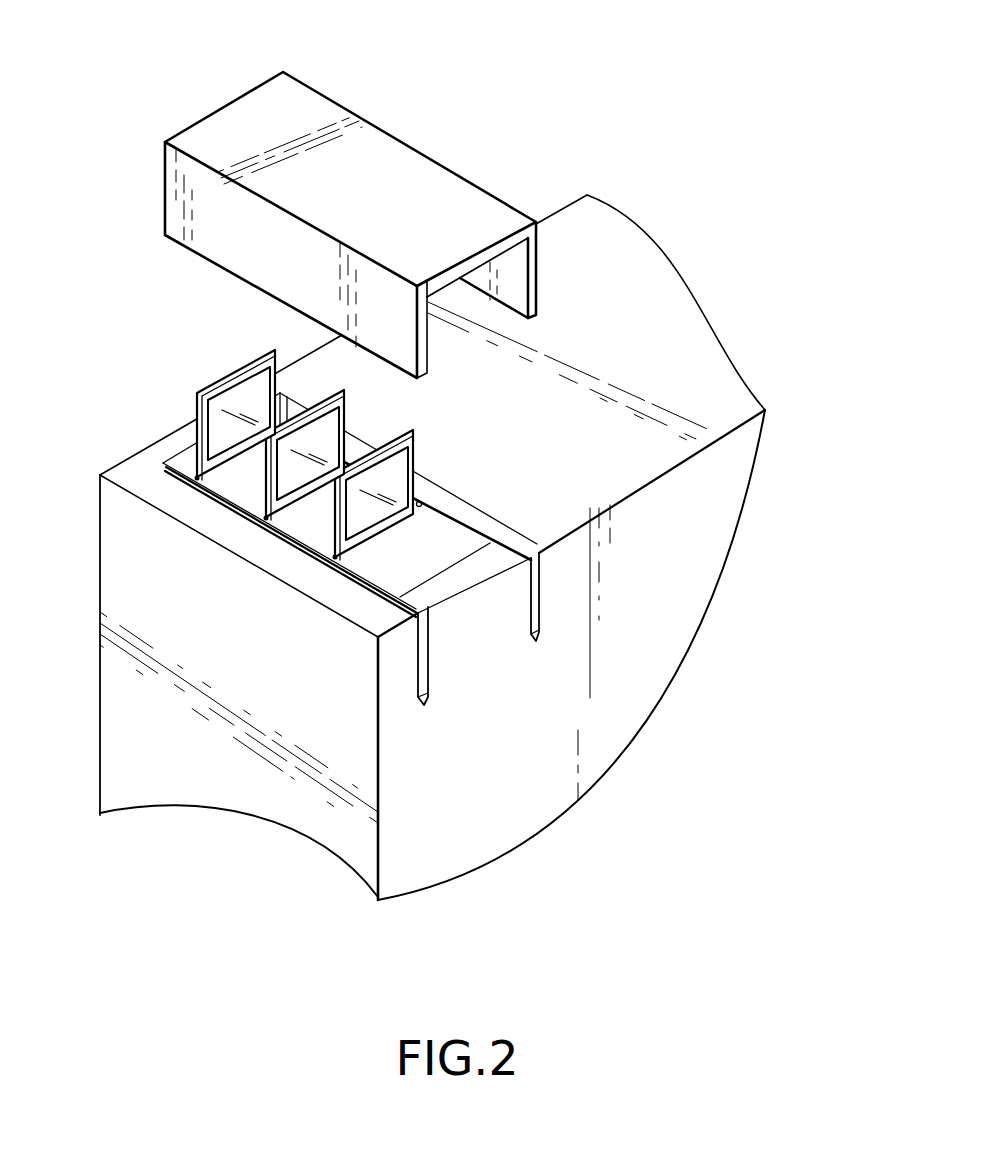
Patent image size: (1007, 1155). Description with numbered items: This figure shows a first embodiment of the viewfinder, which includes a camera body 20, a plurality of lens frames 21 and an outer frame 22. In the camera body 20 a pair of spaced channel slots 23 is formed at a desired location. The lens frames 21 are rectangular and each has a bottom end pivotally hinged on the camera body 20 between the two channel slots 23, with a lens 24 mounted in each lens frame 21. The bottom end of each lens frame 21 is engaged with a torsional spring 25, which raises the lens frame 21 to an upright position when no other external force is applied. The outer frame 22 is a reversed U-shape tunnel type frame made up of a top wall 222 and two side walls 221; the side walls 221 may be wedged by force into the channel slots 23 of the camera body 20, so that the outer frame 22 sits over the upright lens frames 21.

The camera body 20 is at (492, 547).
The lens frame 21 is at (234, 448).
The outer frame 22 is at (402, 194).
The side wall 221 is at (275, 282).
The top wall 222 is at (233, 113).
The channel slot 23 is at (537, 601).
The lens 24 is at (217, 425).
The torsional spring 25 is at (196, 481).